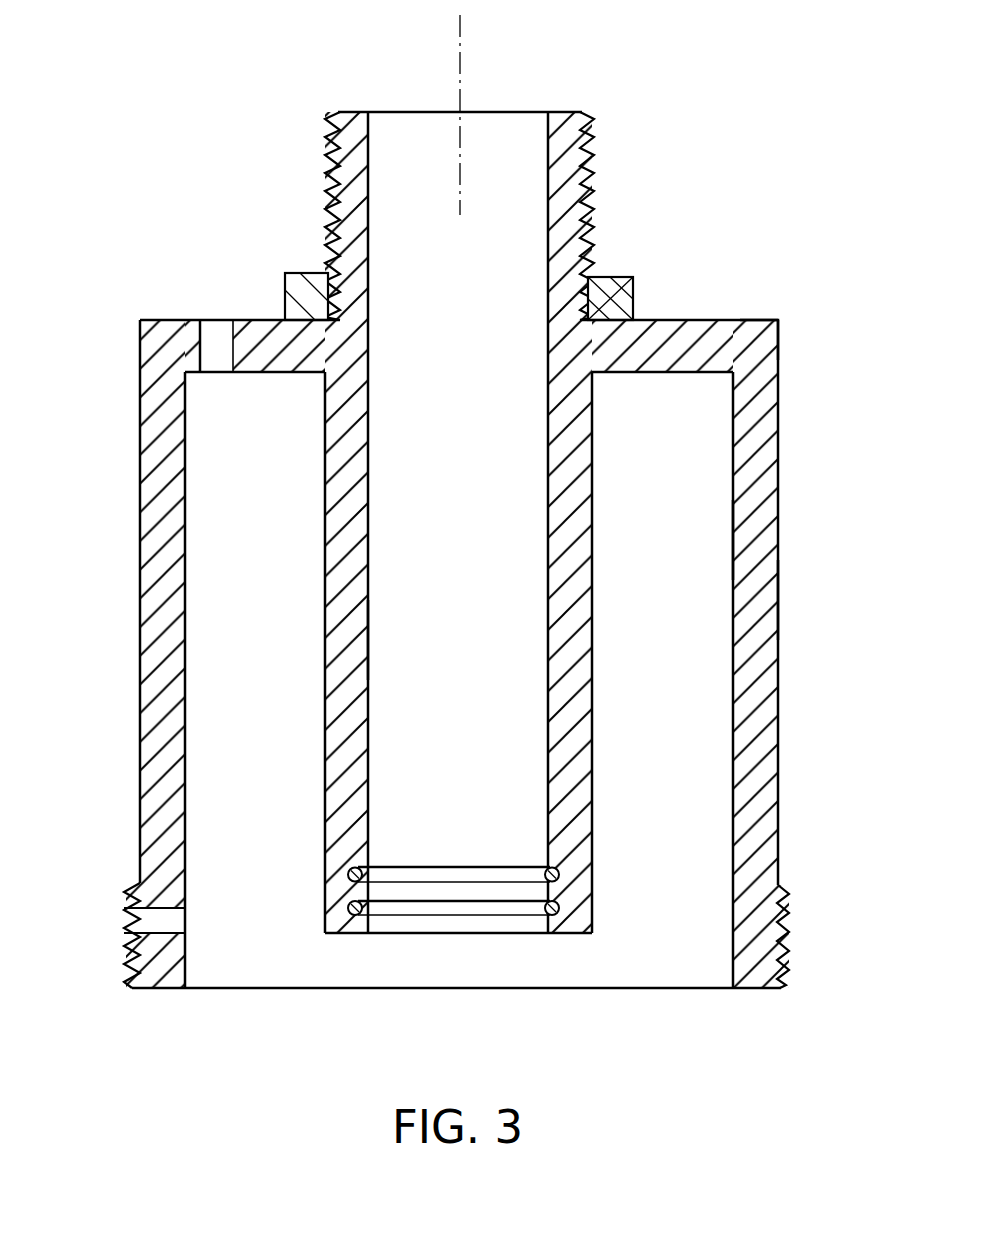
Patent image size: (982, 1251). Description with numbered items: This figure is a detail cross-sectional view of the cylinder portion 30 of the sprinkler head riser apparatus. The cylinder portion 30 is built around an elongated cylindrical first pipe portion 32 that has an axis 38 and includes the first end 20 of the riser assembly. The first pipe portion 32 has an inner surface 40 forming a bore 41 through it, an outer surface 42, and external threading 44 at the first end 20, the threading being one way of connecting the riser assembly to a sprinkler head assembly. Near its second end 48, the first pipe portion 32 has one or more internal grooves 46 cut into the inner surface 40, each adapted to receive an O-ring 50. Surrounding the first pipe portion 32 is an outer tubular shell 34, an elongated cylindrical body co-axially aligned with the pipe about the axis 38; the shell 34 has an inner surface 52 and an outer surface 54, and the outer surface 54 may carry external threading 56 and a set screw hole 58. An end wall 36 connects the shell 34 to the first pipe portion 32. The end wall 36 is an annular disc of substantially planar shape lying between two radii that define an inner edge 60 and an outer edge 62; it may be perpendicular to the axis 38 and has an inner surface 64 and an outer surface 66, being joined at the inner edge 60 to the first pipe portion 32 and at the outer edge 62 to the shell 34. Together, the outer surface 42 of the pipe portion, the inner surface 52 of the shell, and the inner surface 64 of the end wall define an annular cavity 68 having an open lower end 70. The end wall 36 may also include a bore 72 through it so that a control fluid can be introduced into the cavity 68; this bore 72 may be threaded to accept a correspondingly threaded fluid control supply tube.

The cylinder portion 30 is at (748, 156).
The axis 38 is at (462, 30).
The bore 41 is at (411, 135).
The first end 20 is at (565, 110).
The external threading 44 is at (590, 140).
The outer surface 66 is at (258, 315).
The inner edge 60 is at (625, 277).
The bore 72 is at (215, 333).
The end wall 36 is at (680, 343).
The outer edge 62 is at (779, 322).
The inner surface 64 is at (683, 372).
The annular cavity 68 is at (690, 447).
The outer tubular shell 34 is at (765, 482).
The inner surface 52 is at (733, 523).
The outer surface 54 is at (779, 592).
The outer surface 42 is at (323, 492).
The first pipe portion 32 is at (337, 536).
The inner surface 40 is at (368, 622).
The set screw hole 58 is at (165, 918).
The external threading 56 is at (785, 893).
The open lower end 70 is at (672, 955).
The second end 48 is at (580, 936).
The internal grooves 46 is at (353, 877).
The O-ring 50 is at (550, 877).